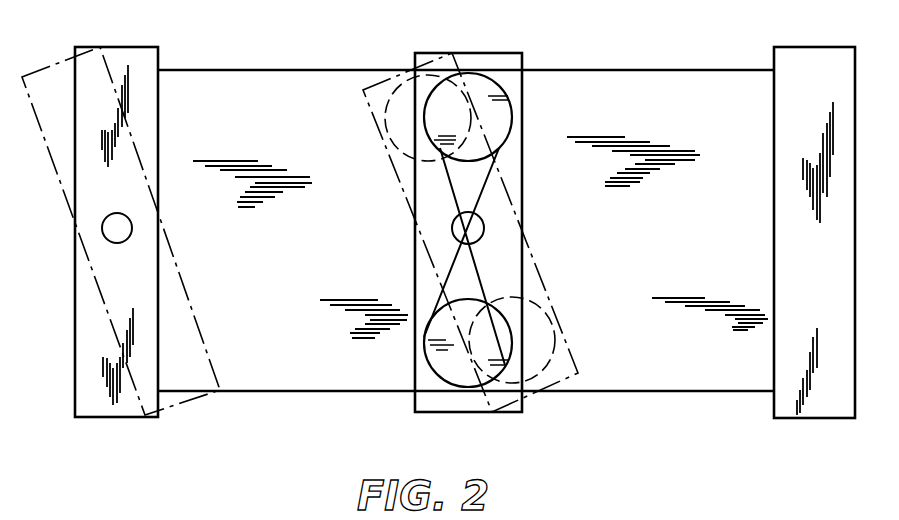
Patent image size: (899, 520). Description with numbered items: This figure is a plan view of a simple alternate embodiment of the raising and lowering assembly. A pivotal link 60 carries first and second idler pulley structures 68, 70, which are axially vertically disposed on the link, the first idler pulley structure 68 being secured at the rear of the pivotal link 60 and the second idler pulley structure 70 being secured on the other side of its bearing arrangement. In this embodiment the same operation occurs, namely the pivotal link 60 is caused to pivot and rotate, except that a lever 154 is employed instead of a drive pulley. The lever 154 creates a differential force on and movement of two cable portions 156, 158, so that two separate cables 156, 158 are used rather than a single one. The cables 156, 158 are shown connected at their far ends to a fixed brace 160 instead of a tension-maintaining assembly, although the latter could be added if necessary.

The lever 154 is at (108, 155).
The cable portion 156 is at (278, 69).
The cable portion 158 is at (278, 391).
The pivotal link 60 is at (514, 58).
The first idler pulley structure 68 is at (508, 120).
The second idler pulley structure 70 is at (433, 360).
The fixed brace 160 is at (783, 210).